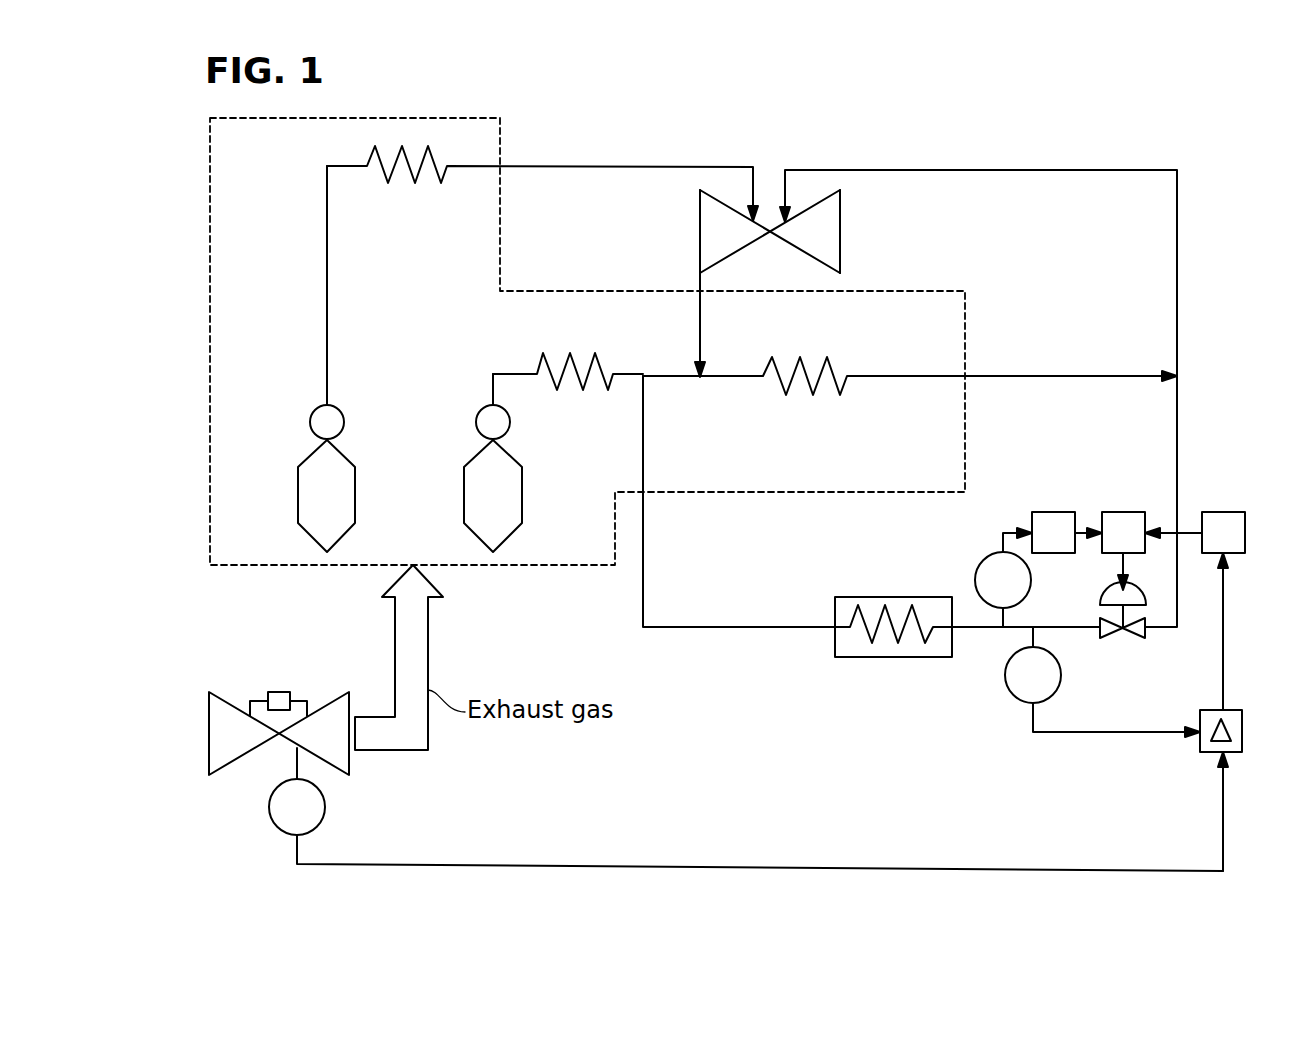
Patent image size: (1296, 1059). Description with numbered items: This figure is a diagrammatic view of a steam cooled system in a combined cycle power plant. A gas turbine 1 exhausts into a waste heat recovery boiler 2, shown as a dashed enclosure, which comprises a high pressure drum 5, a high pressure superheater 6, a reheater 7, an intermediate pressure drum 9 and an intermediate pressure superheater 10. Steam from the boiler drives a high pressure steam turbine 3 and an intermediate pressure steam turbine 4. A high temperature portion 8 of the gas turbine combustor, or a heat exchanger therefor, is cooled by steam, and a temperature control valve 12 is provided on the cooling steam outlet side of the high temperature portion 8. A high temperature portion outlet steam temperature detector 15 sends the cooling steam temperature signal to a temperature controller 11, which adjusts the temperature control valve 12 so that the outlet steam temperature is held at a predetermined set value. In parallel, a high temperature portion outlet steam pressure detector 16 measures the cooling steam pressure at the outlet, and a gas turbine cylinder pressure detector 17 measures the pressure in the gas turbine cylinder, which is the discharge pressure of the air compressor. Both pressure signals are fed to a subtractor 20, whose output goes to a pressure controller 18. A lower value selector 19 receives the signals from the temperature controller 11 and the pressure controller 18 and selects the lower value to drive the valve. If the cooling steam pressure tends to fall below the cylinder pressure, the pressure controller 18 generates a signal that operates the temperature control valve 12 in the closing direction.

The gas turbine 1 is at (250, 672).
The waste heat recovery boiler 2 is at (475, 572).
The high pressure steam turbine 3 is at (700, 222).
The intermediate pressure steam turbine 4 is at (840, 222).
The high pressure drum 5 is at (335, 408).
The high pressure superheater 6 is at (395, 195).
The reheater 7 is at (780, 395).
The high temperature portion 8 is at (852, 660).
The intermediate pressure drum 9 is at (488, 415).
The intermediate pressure superheater 10 is at (541, 385).
The temperature controller 11 is at (1053, 512).
The temperature control valve 12 is at (1103, 640).
The high temperature portion outlet steam temperature detector 15 is at (980, 565).
The high temperature portion outlet steam pressure detector 16 is at (1015, 697).
The gas turbine cylinder pressure detector 17 is at (325, 822).
The pressure controller 18 is at (1225, 553).
The lower value selector 19 is at (1120, 512).
The subtractor 20 is at (1232, 752).